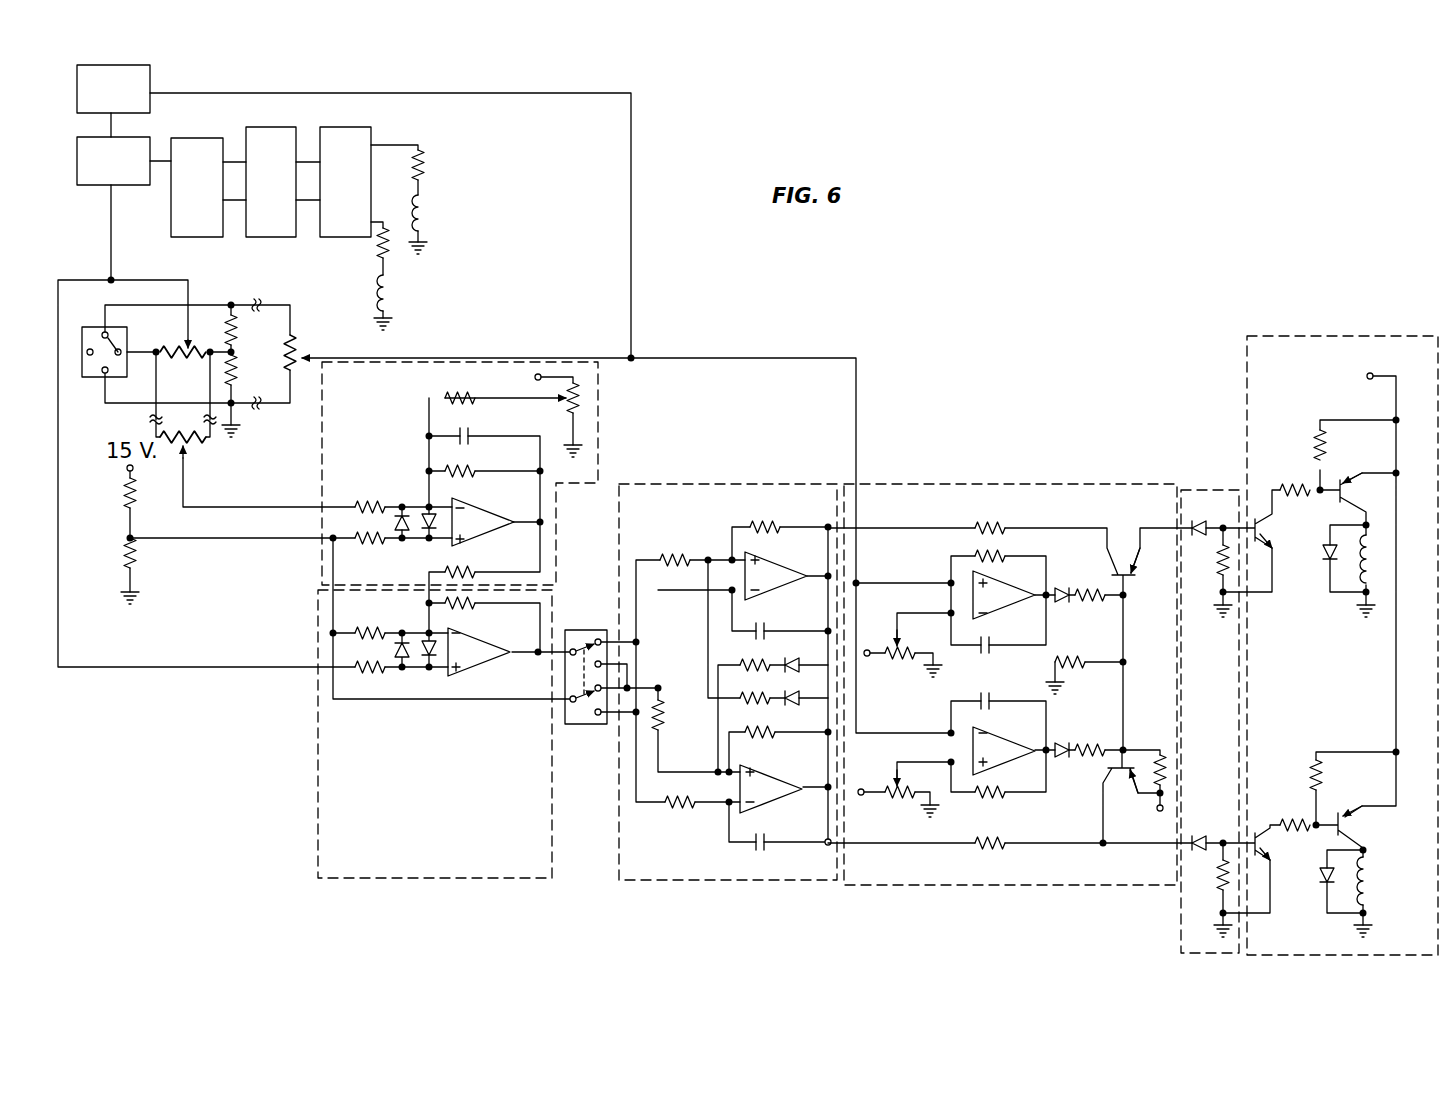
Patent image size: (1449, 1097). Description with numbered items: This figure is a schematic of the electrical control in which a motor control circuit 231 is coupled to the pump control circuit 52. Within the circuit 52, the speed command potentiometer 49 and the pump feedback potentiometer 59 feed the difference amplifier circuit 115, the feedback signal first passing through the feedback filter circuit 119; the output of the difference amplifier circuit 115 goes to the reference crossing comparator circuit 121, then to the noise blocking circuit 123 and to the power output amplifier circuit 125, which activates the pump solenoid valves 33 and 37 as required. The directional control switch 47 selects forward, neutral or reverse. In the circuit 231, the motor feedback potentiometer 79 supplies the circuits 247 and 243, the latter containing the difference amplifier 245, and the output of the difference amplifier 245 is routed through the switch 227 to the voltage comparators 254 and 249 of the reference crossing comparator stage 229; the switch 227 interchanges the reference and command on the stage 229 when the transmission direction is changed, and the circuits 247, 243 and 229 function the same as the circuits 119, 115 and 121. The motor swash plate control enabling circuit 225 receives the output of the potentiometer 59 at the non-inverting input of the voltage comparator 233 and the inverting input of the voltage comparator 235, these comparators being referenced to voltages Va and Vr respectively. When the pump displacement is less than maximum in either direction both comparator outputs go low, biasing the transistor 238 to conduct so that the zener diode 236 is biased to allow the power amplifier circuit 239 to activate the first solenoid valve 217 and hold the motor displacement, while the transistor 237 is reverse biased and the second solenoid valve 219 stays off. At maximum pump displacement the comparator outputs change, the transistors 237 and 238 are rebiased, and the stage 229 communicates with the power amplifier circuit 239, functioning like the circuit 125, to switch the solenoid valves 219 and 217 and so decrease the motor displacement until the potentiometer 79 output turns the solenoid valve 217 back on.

The feedback filter circuit 119 is at (130, 103).
The difference amplifier circuit 115 is at (130, 175).
The reference crossing comparator circuit 121 is at (214, 199).
The noise blocking circuit 123 is at (288, 199).
The power output amplifier circuit 125 is at (362, 199).
The solenoid valve 33 is at (422, 213).
The solenoid valve 37 is at (386, 297).
The electrical control circuit 52 is at (495, 180).
The directional control switch 47 is at (102, 320).
The command signal generator or potentiometer 49 is at (180, 343).
The feedback potentiometer 59 is at (300, 347).
The motor feedback potentiometer 79 is at (188, 456).
The circuit 243 is at (485, 620).
The difference amplifier 245 is at (477, 642).
The circuit 247 is at (598, 414).
The switch 227 is at (604, 724).
The reference crossing comparator stage 229 is at (728, 668).
The voltage comparator 254 is at (763, 563).
The voltage comparator 249 is at (763, 773).
The motor swash plate control enabling circuit 225 is at (911, 621).
The voltage comparator 233 is at (998, 608).
The voltage comparator 235 is at (990, 732).
The transistor 237 is at (1128, 578).
The transistor 238 is at (1108, 772).
The zener diode 236 is at (1200, 837).
The power amplifier circuit 239 is at (1345, 631).
The solenoid valve 219 is at (1378, 564).
The solenoid valve 217 is at (1366, 888).
The circuit 231 is at (996, 383).